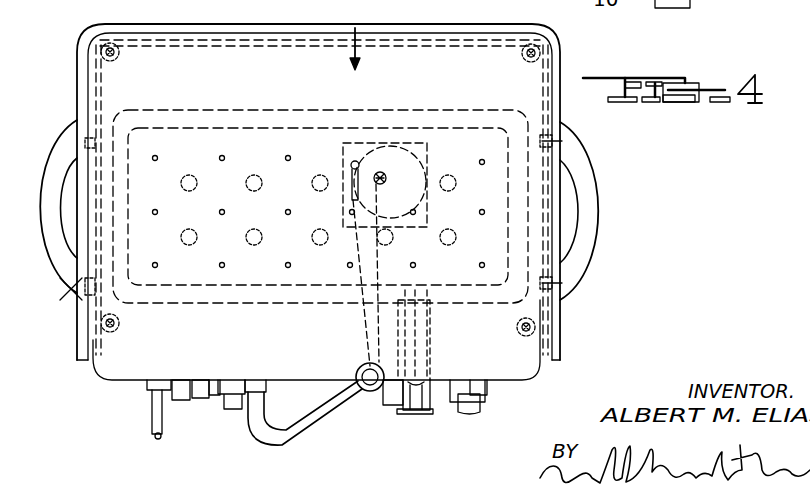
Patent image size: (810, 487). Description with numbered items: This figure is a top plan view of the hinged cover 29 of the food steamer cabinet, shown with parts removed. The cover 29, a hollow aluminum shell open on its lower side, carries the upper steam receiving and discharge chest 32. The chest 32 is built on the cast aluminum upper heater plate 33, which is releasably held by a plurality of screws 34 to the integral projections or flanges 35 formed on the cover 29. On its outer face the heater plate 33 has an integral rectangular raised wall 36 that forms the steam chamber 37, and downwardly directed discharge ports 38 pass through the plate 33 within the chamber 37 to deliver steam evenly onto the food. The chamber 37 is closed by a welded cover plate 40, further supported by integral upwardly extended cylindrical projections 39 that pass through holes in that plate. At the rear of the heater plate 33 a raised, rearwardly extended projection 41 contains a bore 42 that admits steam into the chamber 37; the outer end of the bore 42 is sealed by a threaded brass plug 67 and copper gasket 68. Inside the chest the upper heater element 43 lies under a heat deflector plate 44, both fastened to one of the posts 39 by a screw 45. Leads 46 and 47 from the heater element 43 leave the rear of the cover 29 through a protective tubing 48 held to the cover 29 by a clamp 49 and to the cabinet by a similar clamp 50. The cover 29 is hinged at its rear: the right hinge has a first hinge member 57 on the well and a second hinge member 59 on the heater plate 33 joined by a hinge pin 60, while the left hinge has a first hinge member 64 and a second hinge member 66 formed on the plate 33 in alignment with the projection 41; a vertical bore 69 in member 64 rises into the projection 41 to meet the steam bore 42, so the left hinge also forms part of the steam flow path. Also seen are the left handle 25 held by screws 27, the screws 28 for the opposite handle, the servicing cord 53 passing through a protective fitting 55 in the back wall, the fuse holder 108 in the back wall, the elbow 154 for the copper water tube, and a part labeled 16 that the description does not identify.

The left handle 16 is at (73, 281).
The handle 25 is at (592, 240).
The screws 27 is at (568, 142).
The screws 28 is at (103, 133).
The cover 29 is at (451, 24).
The upper steam receiving and discharge chest 32 is at (360, 24).
The upper heater plate 33 is at (540, 110).
The screws 34 is at (118, 53).
The integral projections or flanges 35 is at (118, 66).
The integral raised wall 36 is at (340, 118).
The steam chamber 37 is at (242, 133).
The discharge ports 38 is at (221, 157).
The cylindrical projections 39 is at (255, 233).
The cover plate 40 is at (470, 143).
The rearwardly extended projection 41 is at (428, 345).
The bore 42 is at (414, 323).
The upper heater element 43 is at (350, 148).
The heat deflector plate 44 is at (350, 166).
The screw 45 is at (386, 179).
The lead 46 is at (352, 270).
The lead 47 is at (386, 246).
The protective tubing 48 is at (322, 418).
The clamp 49 is at (360, 366).
The clamp 50 is at (265, 387).
The servicing cord 53 is at (152, 412).
The protective fitting 55 is at (150, 386).
The first hinge member 57 is at (185, 390).
The second hinge member 59 is at (204, 400).
The hinge pin 60 is at (192, 384).
The first hinge member 64 is at (398, 406).
The second hinge member 66 is at (448, 403).
The threaded brass plug 67 is at (408, 418).
The copper gasket 68 is at (428, 418).
The vertical bore 69 is at (418, 388).
The fuse holder 108 is at (237, 410).
The elbow 154 is at (482, 405).